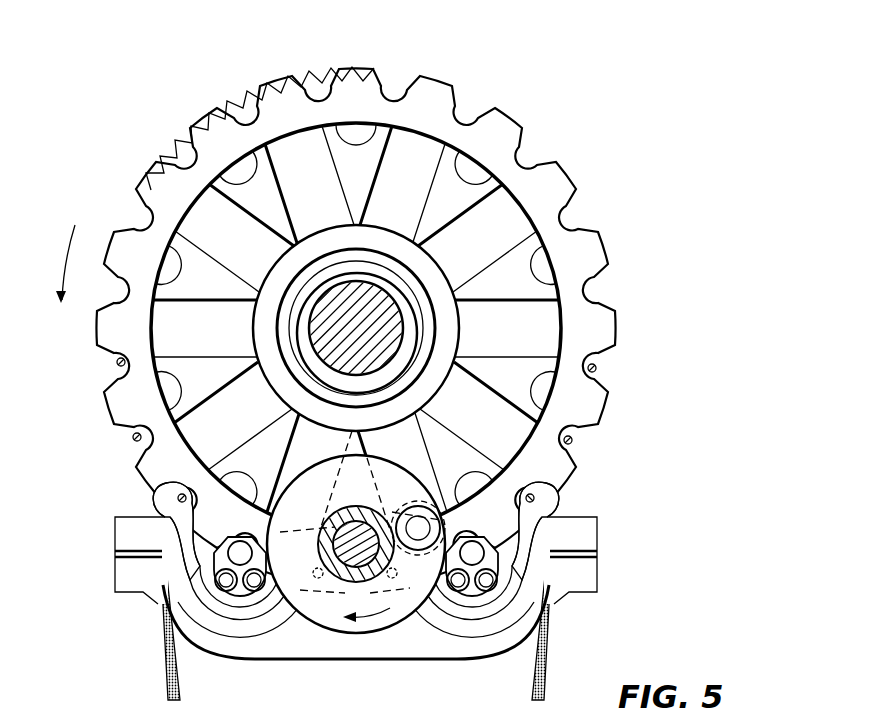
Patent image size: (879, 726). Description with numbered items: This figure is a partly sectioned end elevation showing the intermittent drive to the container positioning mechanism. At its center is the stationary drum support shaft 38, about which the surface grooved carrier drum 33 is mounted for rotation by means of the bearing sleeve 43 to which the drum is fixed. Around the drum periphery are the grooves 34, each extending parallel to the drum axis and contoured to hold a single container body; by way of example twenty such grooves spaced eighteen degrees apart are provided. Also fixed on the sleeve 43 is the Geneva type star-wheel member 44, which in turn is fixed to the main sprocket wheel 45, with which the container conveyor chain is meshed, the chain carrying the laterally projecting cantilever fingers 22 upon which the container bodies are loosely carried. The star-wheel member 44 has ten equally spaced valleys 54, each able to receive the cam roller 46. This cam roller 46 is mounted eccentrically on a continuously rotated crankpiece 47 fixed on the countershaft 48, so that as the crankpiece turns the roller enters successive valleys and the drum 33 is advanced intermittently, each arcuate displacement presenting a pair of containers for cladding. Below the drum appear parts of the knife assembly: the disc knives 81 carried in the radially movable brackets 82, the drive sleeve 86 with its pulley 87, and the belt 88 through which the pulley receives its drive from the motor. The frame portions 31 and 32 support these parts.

The cantilever fingers 22 is at (133, 437).
The bearing housing 31 is at (223, 608).
The bearing housing 32 is at (507, 570).
The drum 33 is at (551, 183).
The groove 34 is at (598, 291).
The drum support shaft 38 is at (331, 329).
The bearing sleeve 43 is at (377, 257).
The star-wheel member 44 is at (507, 290).
The main sprocket wheel 45 is at (245, 118).
The cam roller 46 is at (436, 452).
The crankpiece 47 is at (383, 628).
The countershaft 48 is at (345, 558).
The valleys 54 is at (468, 165).
The disc knives 81 is at (173, 603).
The brackets 82 is at (246, 590).
The drive sleeve 86 is at (190, 567).
The pulley 87 is at (152, 492).
The belt 88 is at (166, 683).